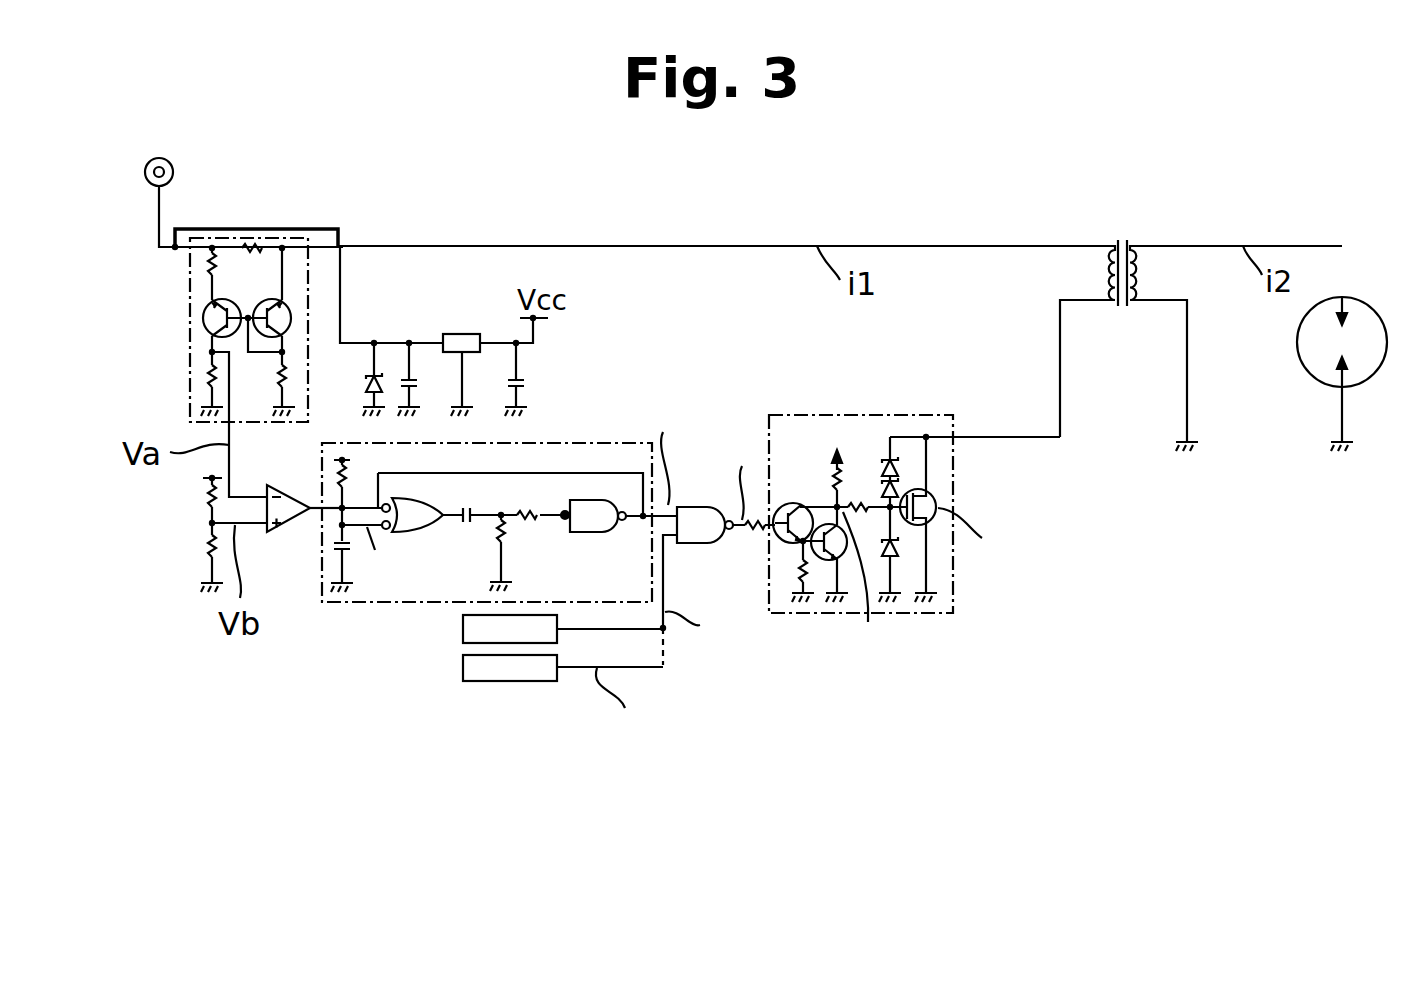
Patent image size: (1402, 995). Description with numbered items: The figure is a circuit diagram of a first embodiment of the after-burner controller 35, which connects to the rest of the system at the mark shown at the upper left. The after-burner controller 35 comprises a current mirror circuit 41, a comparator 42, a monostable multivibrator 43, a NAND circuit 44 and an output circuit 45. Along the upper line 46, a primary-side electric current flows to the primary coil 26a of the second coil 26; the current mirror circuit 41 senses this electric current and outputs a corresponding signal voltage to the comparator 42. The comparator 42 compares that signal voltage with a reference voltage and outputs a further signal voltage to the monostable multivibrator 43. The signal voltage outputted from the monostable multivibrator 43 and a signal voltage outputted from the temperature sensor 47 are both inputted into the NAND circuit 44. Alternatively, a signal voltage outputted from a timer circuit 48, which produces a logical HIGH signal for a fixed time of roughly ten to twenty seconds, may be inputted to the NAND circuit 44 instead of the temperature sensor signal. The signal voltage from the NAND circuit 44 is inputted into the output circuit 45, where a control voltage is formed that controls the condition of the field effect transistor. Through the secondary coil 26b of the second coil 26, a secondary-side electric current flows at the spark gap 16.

The spark gap 16 is at (1297, 360).
The second coil 26 is at (1158, 300).
The primary coil 26a is at (1105, 280).
The secondary coil 26b is at (1140, 277).
The after-burner controller 35 is at (694, 534).
The current mirror circuit 41 is at (190, 322).
The comparator 42 is at (292, 530).
The monostable multivibrator 43 is at (355, 605).
The NAND circuit 44 is at (705, 506).
The output circuit 45 is at (872, 413).
The line 46 is at (563, 246).
The temperature sensor 47 is at (463, 633).
The timer circuit 48 is at (463, 668).